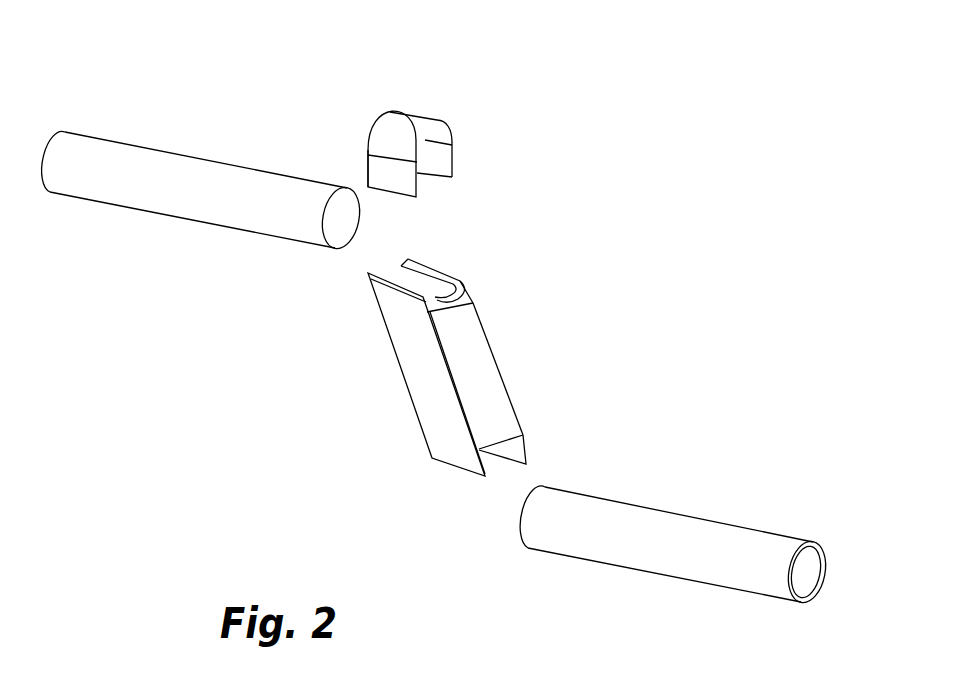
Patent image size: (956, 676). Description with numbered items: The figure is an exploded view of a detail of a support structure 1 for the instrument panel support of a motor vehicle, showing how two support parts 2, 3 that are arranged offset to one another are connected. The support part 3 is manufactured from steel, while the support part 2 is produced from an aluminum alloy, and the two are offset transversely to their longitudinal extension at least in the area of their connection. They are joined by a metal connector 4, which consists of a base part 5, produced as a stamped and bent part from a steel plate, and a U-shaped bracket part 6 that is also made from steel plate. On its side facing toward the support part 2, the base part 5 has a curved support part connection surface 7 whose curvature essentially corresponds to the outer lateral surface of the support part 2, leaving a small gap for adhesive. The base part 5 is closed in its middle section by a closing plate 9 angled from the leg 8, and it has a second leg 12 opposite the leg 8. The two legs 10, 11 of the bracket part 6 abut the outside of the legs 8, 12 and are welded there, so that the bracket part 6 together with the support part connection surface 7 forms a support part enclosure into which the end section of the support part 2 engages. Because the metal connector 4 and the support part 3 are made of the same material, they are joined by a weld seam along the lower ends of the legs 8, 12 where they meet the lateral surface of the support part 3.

The support structure 1 is at (455, 304).
The support part 2 is at (181, 198).
The support part 3 is at (663, 553).
The metal connector 4 is at (417, 341).
The base part 5 is at (505, 357).
The bracket part 6 is at (433, 114).
The support part connection surface 7 is at (423, 283).
The leg 8 is at (408, 345).
The closing plate 9 is at (469, 381).
The leg 10 is at (388, 175).
The leg 11 is at (455, 165).
The leg 12 is at (518, 450).